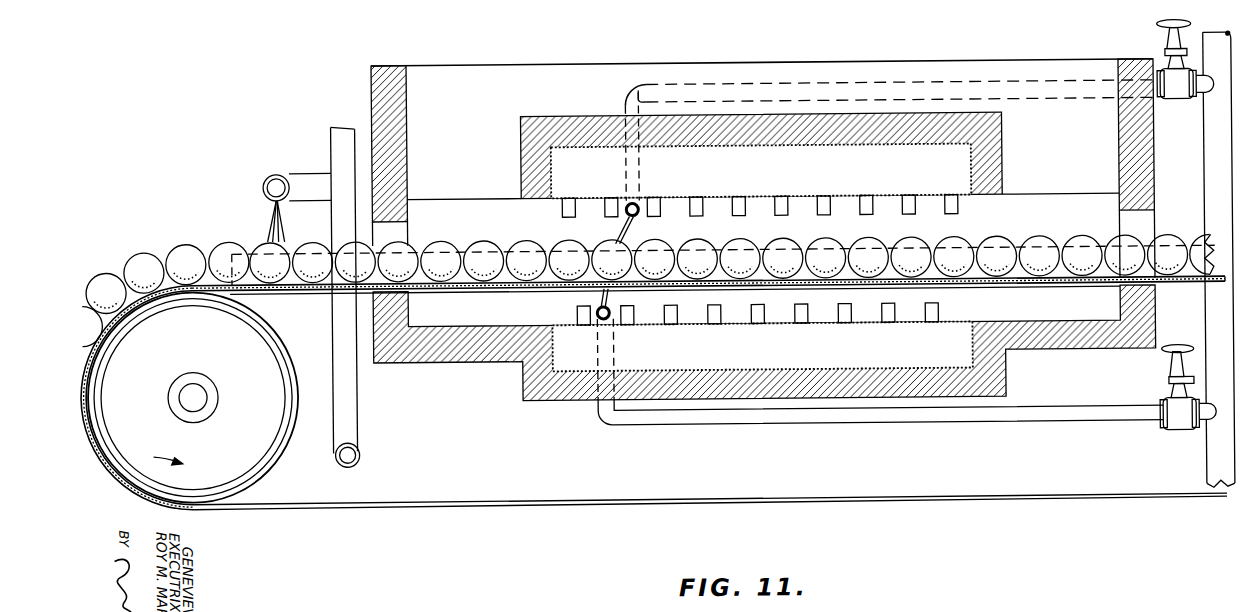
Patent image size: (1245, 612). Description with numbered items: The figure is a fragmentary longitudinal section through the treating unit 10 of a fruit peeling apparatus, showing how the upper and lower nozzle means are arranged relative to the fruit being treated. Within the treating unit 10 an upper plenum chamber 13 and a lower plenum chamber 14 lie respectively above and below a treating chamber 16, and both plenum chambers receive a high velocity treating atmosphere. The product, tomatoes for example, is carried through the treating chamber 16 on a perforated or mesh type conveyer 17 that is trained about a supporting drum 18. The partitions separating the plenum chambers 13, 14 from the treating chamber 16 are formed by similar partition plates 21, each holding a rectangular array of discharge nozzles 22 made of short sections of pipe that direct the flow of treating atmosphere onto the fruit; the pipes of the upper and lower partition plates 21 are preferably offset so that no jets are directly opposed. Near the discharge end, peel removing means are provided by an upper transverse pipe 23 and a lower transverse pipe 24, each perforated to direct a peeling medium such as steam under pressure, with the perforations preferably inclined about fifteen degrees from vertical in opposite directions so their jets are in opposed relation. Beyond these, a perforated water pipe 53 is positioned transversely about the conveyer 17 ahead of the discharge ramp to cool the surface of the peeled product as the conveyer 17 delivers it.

The treating unit 10 is at (362, 91).
The upper plenum chamber 13 is at (960, 175).
The lower plenum chamber 14 is at (957, 350).
The treating chamber 16 is at (1032, 238).
The conveyer 17 is at (504, 290).
The supporting drum 18 is at (273, 454).
The partition plate 21 is at (765, 203).
The discharge nozzle 22 is at (672, 319).
The upper transverse pipe 23 is at (641, 213).
The lower transverse pipe 24 is at (596, 311).
The perforated water pipe 53 is at (284, 171).